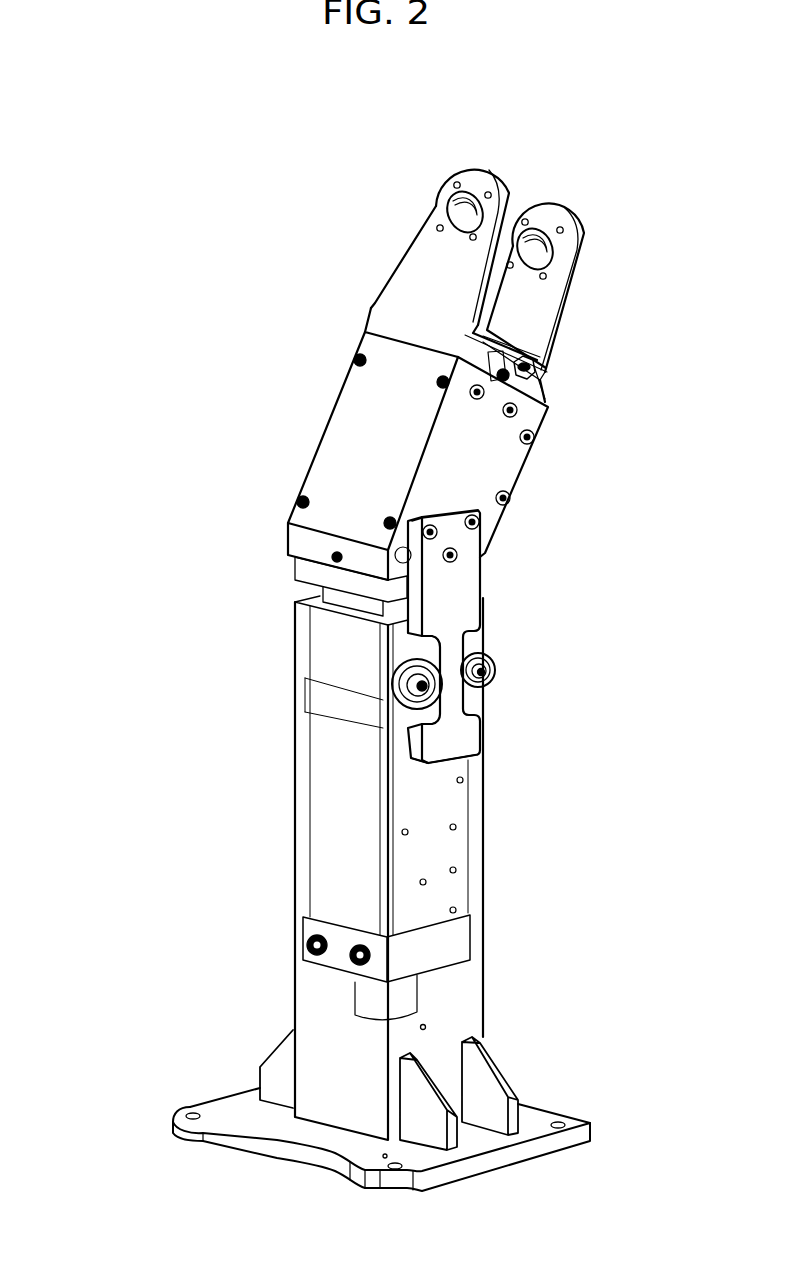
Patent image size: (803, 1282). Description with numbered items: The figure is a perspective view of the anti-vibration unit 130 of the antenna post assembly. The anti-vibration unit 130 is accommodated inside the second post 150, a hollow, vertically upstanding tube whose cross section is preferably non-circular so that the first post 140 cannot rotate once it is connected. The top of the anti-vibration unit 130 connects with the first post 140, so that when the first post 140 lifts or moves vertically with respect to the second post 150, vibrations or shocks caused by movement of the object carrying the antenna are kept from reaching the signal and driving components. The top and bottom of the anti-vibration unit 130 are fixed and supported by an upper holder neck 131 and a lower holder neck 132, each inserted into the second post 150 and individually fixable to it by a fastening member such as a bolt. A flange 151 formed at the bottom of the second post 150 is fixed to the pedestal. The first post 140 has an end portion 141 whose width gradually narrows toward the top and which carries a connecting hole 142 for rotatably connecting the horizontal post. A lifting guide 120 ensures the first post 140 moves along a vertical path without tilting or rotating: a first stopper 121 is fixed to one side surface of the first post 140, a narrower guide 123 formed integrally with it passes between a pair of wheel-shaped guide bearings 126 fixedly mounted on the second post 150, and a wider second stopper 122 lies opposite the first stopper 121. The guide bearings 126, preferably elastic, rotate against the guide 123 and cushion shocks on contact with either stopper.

The lifting guide 120 is at (627, 588).
The first stopper 121 is at (460, 593).
The second stopper 122 is at (457, 735).
The guide 123 is at (470, 684).
The guide bearings 126 is at (398, 690).
The anti-vibration unit 130 is at (330, 856).
The upper holder neck 131 is at (322, 653).
The lower holder neck 132 is at (332, 960).
The first post 140 is at (347, 430).
The end portion 141 is at (415, 275).
The connecting hole 142 is at (457, 207).
The second post 150 is at (302, 782).
The flange 151 is at (230, 1105).